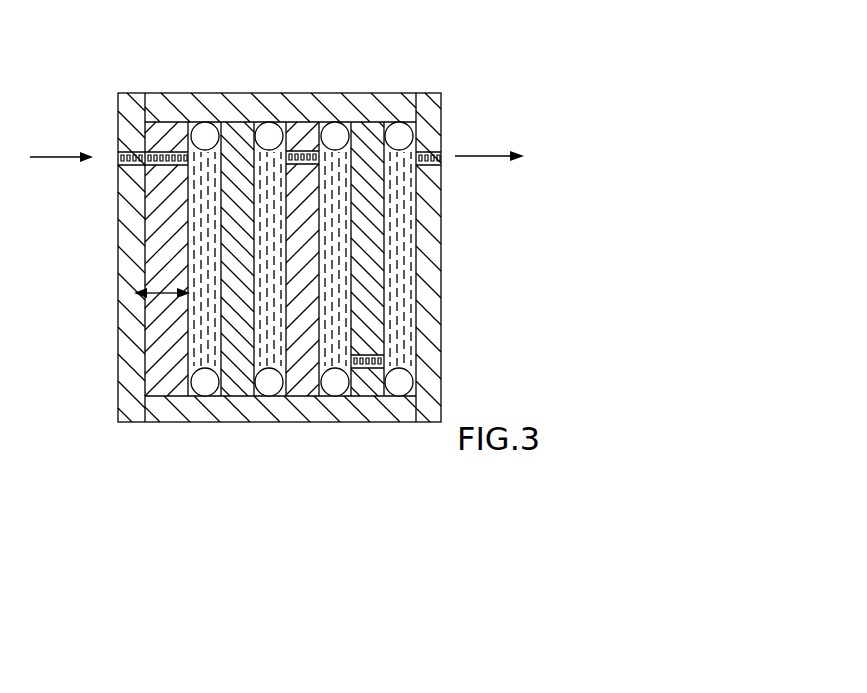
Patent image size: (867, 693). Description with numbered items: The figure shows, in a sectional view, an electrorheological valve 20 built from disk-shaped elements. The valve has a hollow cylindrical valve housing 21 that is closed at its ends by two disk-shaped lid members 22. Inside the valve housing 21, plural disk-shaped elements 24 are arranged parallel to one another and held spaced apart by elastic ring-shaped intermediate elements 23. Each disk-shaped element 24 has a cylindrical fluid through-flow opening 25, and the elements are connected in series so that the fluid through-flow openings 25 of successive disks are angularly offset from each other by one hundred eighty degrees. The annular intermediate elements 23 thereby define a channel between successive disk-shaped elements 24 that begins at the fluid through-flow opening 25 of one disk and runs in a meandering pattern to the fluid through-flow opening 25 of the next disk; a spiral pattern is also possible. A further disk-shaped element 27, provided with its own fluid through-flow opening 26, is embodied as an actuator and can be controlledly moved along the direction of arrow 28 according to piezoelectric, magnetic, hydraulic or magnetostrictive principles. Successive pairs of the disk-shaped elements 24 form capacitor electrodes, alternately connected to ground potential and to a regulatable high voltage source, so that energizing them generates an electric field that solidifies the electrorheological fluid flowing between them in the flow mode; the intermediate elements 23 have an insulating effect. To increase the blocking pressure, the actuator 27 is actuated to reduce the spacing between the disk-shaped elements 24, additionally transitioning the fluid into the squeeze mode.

The valve 20 is at (530, 83).
The valve housing 21 is at (265, 108).
The disk-shaped lid members 22 is at (430, 299).
The elastic ring-shaped intermediate elements 23 is at (392, 378).
The disk-shaped elements 24 is at (242, 140).
The fluid through-flow opening 25 is at (305, 140).
The fluid through-flow opening 26 is at (168, 132).
The further disk-shaped element 27 is at (160, 380).
The arrow 28 is at (138, 306).